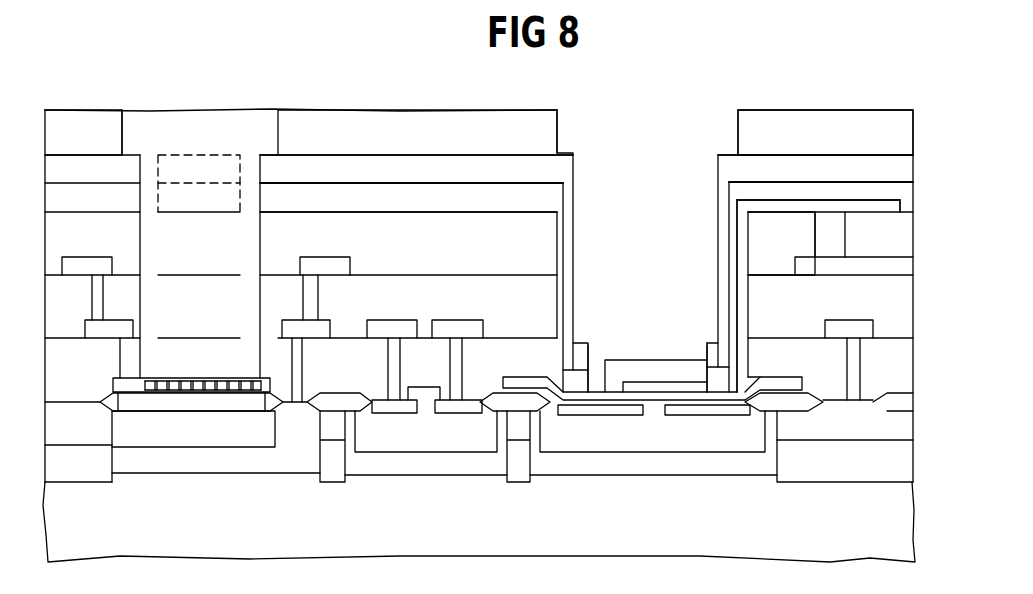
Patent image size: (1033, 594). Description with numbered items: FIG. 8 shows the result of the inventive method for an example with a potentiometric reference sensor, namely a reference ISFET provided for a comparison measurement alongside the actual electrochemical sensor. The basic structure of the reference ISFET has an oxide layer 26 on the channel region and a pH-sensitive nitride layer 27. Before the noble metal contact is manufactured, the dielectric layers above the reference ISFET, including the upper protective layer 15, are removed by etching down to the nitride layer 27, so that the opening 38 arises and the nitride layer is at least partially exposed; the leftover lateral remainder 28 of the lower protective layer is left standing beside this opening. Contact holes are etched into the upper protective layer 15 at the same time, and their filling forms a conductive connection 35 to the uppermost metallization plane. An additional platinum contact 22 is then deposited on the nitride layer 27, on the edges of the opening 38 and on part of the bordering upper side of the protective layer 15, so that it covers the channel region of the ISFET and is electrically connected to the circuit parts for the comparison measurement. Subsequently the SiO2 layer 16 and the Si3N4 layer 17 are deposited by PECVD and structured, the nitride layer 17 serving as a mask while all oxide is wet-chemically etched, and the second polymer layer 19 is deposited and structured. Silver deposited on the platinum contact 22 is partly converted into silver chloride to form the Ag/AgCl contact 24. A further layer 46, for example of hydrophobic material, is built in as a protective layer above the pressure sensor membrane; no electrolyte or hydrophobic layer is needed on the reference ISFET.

The upper protective layer 15 is at (782, 243).
The SiO2 layer 16 is at (367, 198).
The Si3N4 layer 17 is at (448, 170).
The second polymer layer 19 is at (78, 130).
The additional platinum contact 22 is at (870, 207).
The Ag/AgCl contact 24 is at (648, 370).
The oxide layer 26 is at (600, 413).
The nitride layer 27 is at (713, 412).
The lateral remainder of the lower protective layer 28 is at (545, 380).
The conductive connection 35 is at (835, 242).
The opening 38 is at (655, 280).
The further layer 46 is at (203, 137).